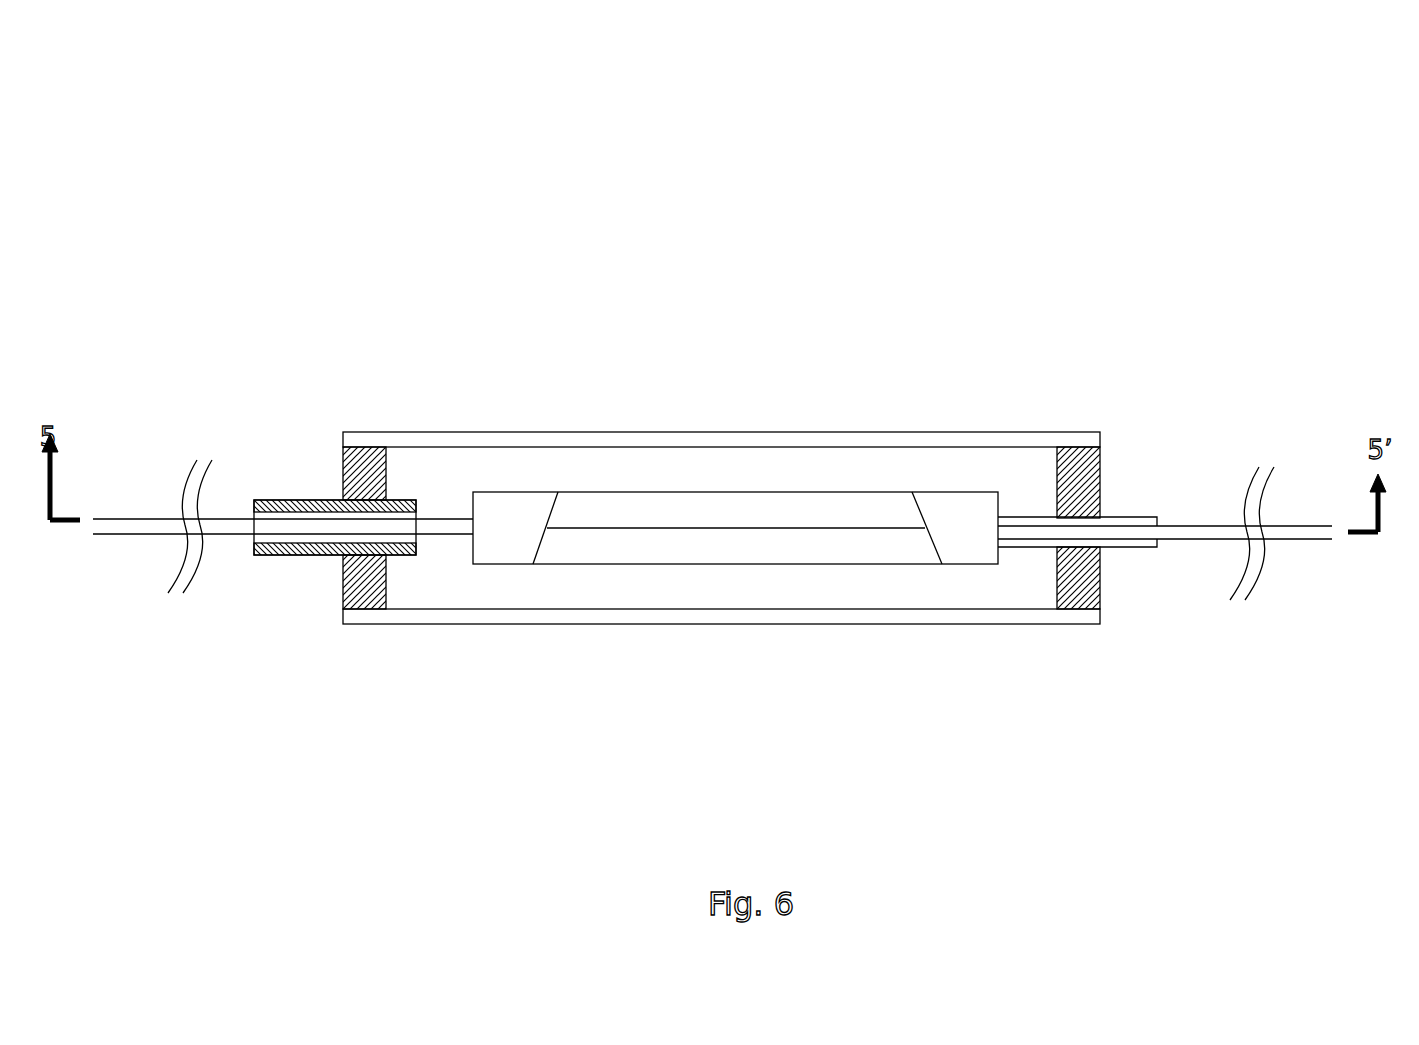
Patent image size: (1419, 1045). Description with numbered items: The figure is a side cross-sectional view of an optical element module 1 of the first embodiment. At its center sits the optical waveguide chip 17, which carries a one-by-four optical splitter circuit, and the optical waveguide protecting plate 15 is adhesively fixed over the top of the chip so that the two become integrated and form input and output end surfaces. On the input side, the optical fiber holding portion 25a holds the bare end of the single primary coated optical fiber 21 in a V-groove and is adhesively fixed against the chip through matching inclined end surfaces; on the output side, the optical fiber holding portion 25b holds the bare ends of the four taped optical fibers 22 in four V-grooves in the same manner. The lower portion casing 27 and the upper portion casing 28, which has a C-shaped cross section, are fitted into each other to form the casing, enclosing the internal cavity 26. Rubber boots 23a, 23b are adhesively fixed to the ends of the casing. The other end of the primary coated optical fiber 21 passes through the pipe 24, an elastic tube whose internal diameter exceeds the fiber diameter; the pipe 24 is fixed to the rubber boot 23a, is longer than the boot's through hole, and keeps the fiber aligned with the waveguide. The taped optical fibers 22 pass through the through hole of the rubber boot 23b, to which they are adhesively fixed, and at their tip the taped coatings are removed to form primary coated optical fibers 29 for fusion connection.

The optical element module 1 is at (708, 243).
The optical waveguide protecting plate 15 is at (671, 507).
The optical waveguide chip 17 is at (675, 553).
The primary coated optical fiber 21 is at (125, 517).
The taped optical fibers 22 is at (1138, 517).
The rubber boot 23a is at (340, 597).
The rubber boot 23b is at (1100, 599).
The pipe 24 is at (293, 500).
The optical fiber holding portion 25a is at (525, 507).
The optical fiber holding portion 25b is at (933, 510).
The internal cavity 26 is at (793, 478).
The lower portion casing 27 is at (413, 624).
The upper portion casing 28 is at (403, 432).
The primary coated optical fibers 29 is at (1277, 523).